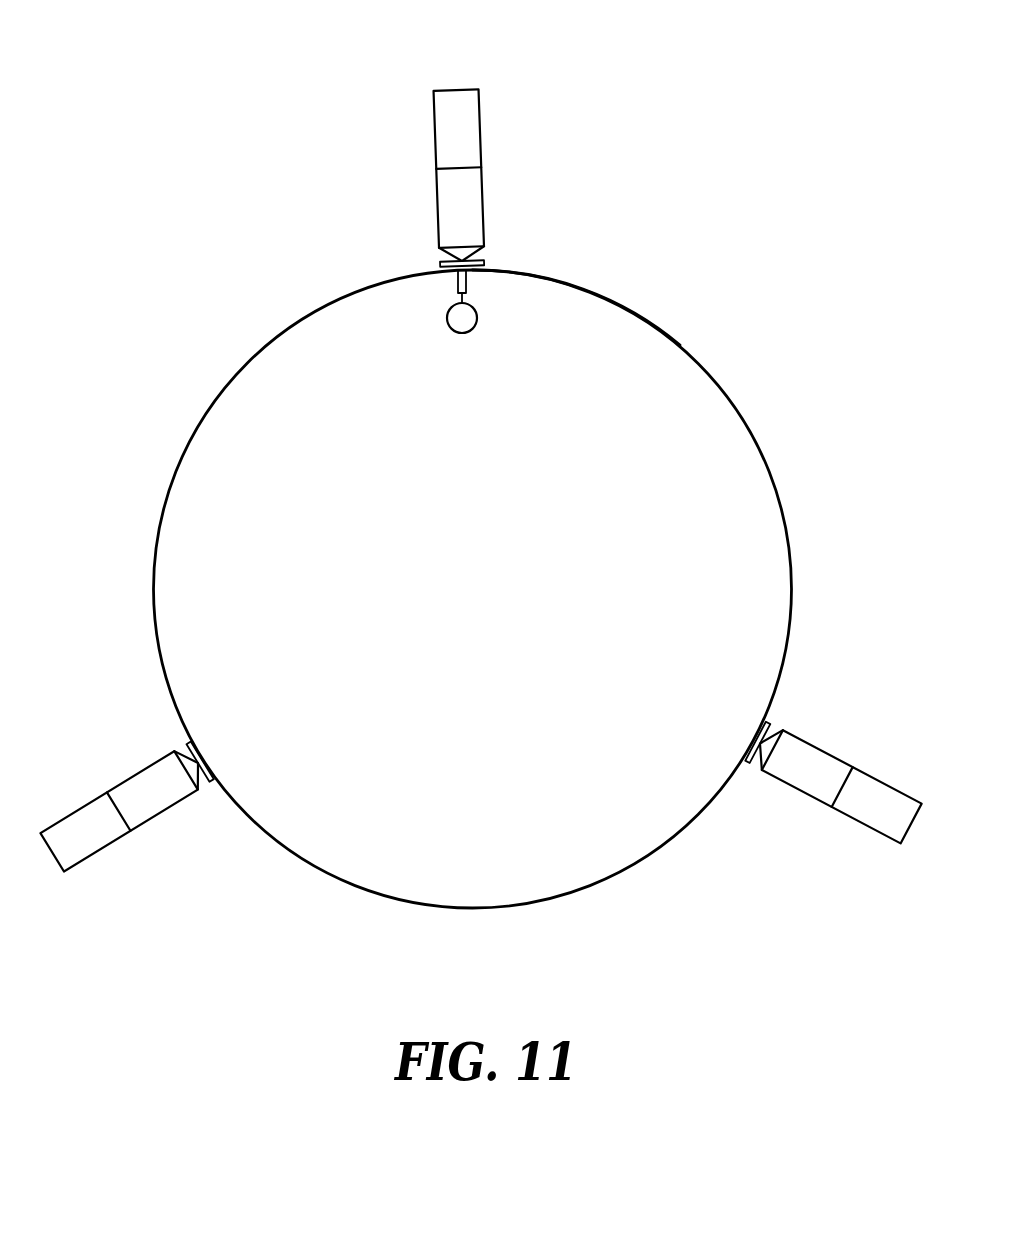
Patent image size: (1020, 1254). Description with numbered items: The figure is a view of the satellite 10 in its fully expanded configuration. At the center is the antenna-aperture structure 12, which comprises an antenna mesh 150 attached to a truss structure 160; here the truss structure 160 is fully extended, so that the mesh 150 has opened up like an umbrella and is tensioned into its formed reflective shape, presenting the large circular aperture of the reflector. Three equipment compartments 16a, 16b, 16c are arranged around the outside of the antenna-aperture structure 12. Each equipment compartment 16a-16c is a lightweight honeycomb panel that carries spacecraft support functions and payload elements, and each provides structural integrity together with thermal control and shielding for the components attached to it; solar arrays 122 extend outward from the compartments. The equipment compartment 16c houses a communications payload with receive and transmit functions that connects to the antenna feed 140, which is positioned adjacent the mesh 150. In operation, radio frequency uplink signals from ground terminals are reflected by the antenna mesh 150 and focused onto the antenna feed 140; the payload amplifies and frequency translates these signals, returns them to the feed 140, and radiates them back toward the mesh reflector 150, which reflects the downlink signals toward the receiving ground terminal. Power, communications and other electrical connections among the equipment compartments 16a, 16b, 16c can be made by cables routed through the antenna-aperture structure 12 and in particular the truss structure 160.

The satellite 10 is at (185, 223).
The antenna-aperture structure 12 is at (622, 873).
The equipment compartment 16a is at (210, 775).
The equipment compartment 16b is at (765, 723).
The equipment compartment 16c is at (482, 260).
The solar arrays 122 is at (462, 138).
The antenna feed 140 is at (448, 316).
The antenna mesh 150 is at (433, 532).
The truss structure 160 is at (680, 345).